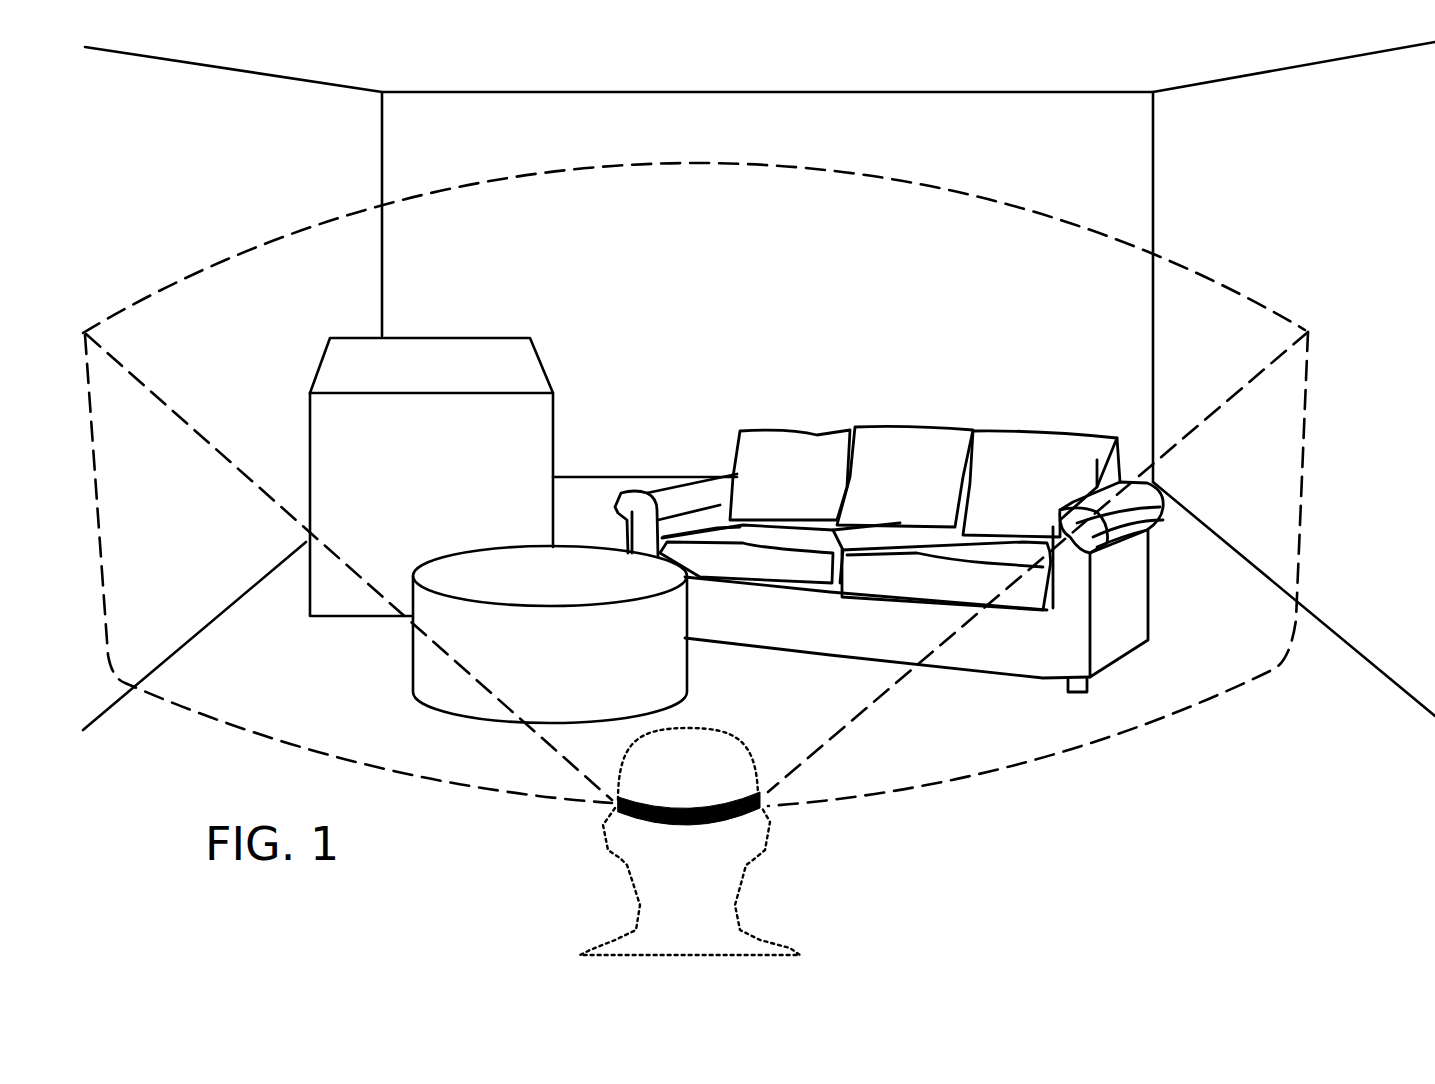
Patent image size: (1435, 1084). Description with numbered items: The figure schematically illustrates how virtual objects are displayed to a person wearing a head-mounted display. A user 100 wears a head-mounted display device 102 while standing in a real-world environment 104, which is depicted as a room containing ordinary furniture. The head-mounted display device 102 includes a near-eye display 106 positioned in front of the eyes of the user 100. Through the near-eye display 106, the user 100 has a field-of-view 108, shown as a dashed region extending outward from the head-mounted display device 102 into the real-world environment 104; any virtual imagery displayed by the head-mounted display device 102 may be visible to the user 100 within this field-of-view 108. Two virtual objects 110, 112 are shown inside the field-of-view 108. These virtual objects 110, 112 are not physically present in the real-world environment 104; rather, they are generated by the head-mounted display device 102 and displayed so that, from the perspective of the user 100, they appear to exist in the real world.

The user 100 is at (706, 786).
The head-mounted display device 102 is at (783, 827).
The real-world environment 104 is at (238, 124).
The near-eye display 106 is at (618, 797).
The field-of-view 108 is at (246, 250).
The virtual object 110 is at (497, 337).
The virtual object 112 is at (447, 552).